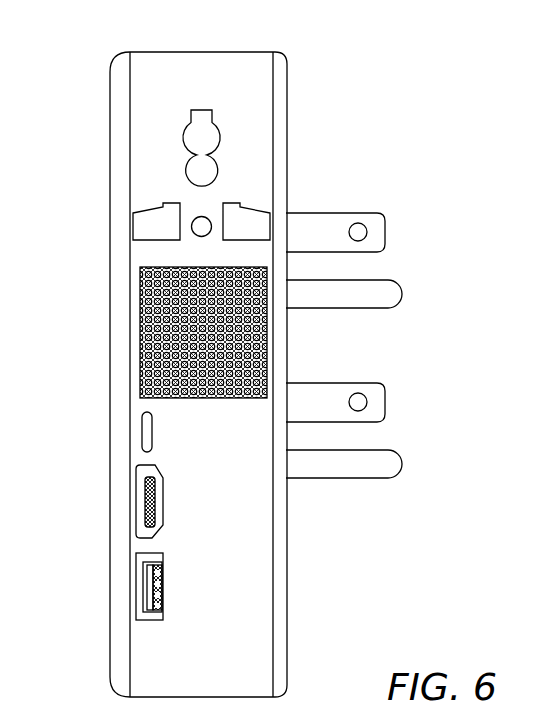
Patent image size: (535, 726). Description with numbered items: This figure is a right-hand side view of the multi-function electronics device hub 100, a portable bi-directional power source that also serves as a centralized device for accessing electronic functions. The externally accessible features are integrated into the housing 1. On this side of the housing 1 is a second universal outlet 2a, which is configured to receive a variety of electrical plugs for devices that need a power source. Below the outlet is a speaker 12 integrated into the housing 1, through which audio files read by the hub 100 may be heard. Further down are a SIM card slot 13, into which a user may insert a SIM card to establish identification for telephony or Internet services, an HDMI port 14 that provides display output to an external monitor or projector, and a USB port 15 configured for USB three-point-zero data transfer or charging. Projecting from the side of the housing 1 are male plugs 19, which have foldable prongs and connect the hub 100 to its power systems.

The multi-function electronics device hub 100 is at (120, 40).
The housing 1 is at (247, 60).
The second universal outlet 2a is at (183, 137).
The speaker 12 is at (140, 310).
The SIM card slot 13 is at (140, 432).
The HDMI port 14 is at (136, 502).
The USB port 15 is at (136, 588).
The male plug 19 is at (342, 213).